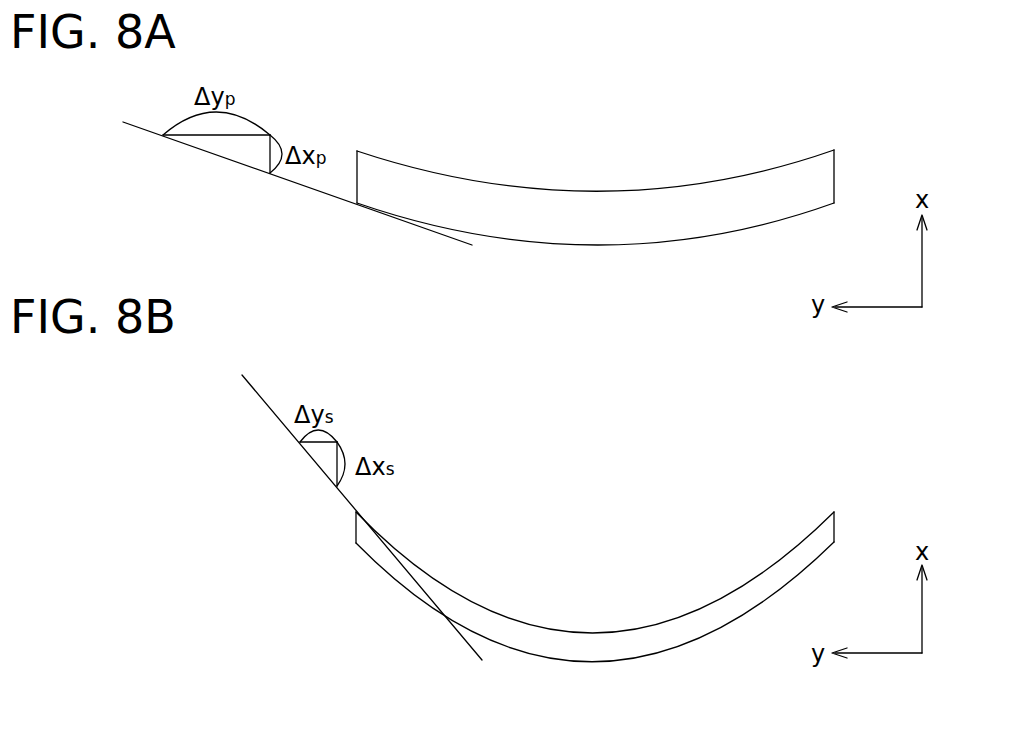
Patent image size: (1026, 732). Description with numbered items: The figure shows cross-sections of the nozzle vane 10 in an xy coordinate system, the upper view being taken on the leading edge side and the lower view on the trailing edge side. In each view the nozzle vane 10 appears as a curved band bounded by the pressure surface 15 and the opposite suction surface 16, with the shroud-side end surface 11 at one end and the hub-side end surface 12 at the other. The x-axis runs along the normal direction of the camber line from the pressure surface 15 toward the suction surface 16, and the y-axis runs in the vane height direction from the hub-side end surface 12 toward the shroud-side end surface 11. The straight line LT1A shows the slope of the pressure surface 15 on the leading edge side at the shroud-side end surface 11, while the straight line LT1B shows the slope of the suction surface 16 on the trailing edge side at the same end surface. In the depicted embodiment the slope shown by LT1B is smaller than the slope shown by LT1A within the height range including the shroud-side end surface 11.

In FIG. 8A, the nozzle vane 10 is at (613, 202).
In FIG. 8B, the nozzle vane 10 is at (603, 621).
In FIG. 8A, the shroud-side end surface 11 is at (355, 171).
In FIG. 8B, the shroud-side end surface 11 is at (355, 520).
In FIG. 8A, the hub-side end surface 12 is at (836, 172).
In FIG. 8B, the hub-side end surface 12 is at (836, 520).
In FIG. 8A, the pressure surface 15 is at (597, 250).
In FIG. 8B, the pressure surface 15 is at (597, 665).
In FIG. 8A, the suction surface 16 is at (596, 190).
In FIG. 8B, the suction surface 16 is at (596, 633).
In FIG. 8A, the straight line LT1A is at (149, 135).
In FIG. 8B, the straight line LT1B is at (258, 395).